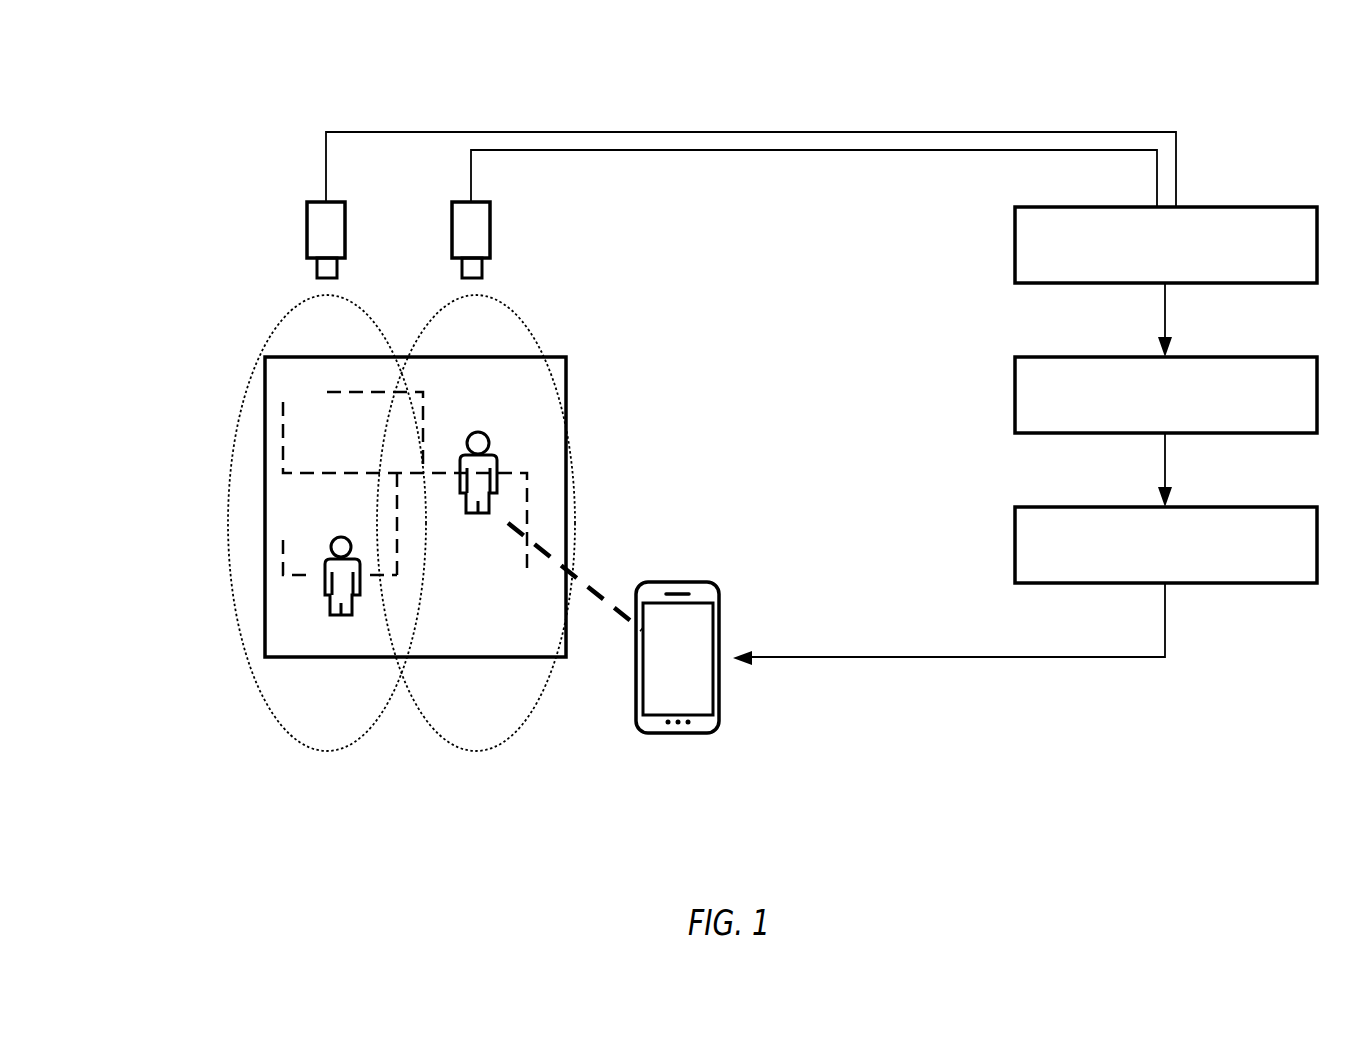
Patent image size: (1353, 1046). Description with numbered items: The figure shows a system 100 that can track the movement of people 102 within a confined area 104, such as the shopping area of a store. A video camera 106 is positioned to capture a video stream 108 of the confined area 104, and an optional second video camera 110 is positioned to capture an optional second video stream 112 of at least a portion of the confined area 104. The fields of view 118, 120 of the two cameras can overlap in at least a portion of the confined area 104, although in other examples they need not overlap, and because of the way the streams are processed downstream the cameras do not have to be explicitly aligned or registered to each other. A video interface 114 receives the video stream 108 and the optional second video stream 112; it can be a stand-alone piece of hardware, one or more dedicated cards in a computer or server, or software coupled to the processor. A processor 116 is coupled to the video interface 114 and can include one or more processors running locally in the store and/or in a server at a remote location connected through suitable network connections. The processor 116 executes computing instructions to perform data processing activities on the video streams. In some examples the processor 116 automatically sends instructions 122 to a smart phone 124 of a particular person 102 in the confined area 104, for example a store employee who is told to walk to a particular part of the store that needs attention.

The system 100 is at (273, 117).
The people 102 is at (360, 600).
The confined area 104 is at (568, 370).
The video camera 106 is at (307, 231).
The video stream 108 is at (712, 131).
The second video camera 110 is at (492, 231).
The second video stream 112 is at (716, 152).
The video interface 114 is at (1015, 243).
The processor 116 is at (1015, 395).
The field of view 118 is at (228, 570).
The field of view 120 is at (577, 520).
The instructions 122 is at (1015, 544).
The smart phone 124 is at (675, 735).